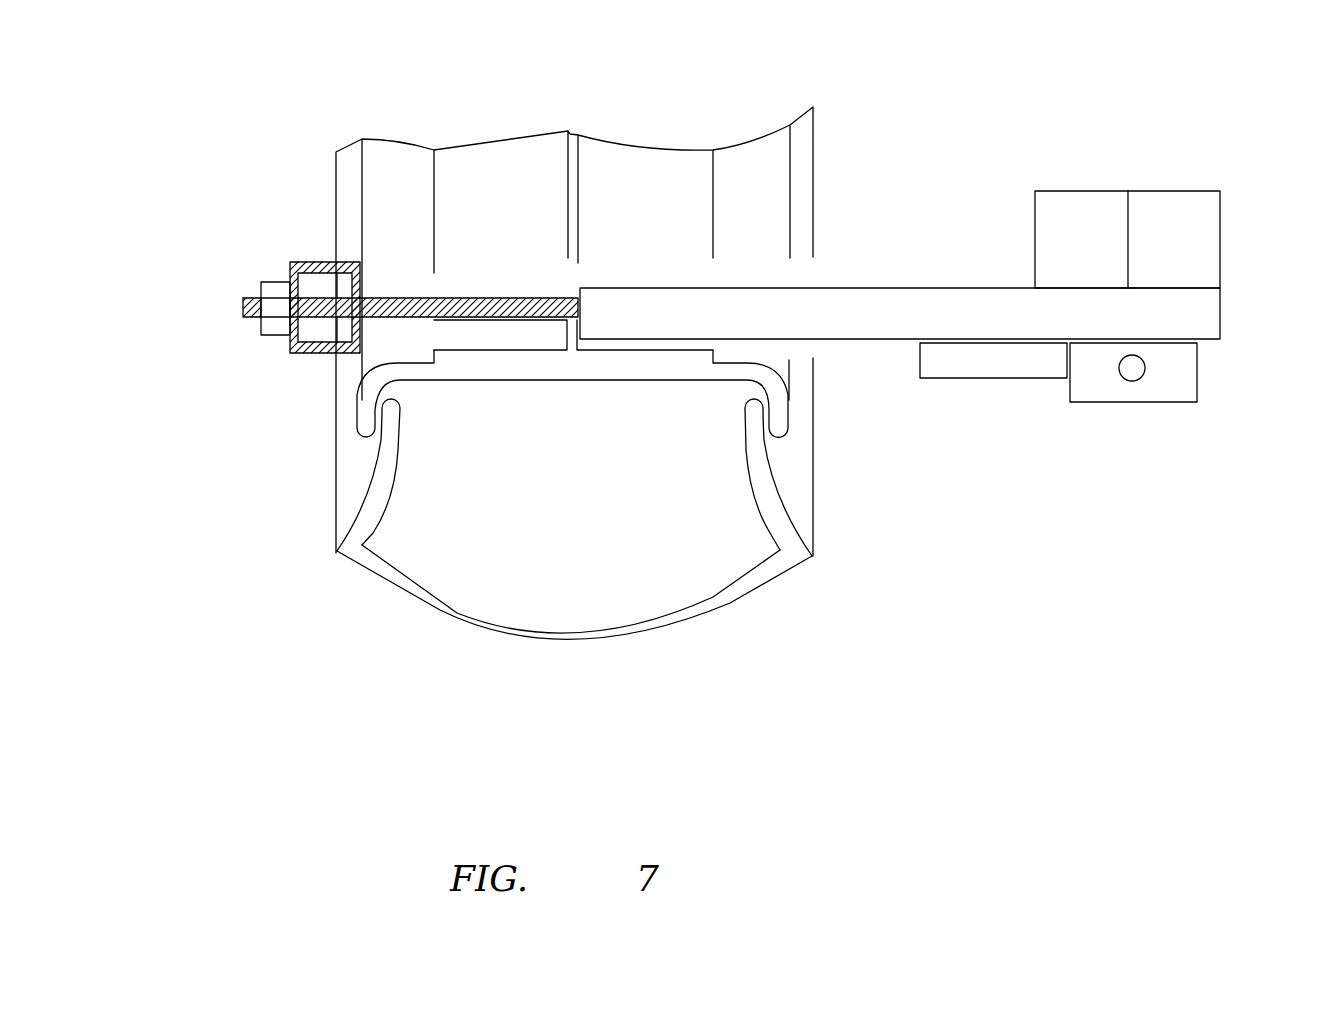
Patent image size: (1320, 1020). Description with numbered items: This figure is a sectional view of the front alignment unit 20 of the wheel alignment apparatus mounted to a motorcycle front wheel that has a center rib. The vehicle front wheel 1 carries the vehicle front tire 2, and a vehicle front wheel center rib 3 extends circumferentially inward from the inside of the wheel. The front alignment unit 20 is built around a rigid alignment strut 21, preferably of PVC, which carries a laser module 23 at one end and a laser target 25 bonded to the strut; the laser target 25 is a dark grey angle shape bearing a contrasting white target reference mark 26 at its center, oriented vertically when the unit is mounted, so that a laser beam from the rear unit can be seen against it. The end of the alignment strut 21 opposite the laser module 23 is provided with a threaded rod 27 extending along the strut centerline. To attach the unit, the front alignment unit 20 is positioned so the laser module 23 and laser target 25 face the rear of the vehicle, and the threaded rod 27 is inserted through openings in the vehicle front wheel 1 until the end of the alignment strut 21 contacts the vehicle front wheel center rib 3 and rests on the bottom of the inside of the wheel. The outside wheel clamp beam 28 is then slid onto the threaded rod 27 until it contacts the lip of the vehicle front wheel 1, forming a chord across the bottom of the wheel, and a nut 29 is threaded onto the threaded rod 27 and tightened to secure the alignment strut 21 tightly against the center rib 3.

The vehicle front wheel 1 is at (665, 147).
The vehicle front tire 2 is at (427, 613).
The vehicle front wheel center rib 3 is at (577, 322).
The front alignment unit 20 is at (1048, 530).
The alignment strut 21 is at (870, 272).
The laser module 23 is at (1137, 380).
The laser target 25 is at (1170, 190).
The target reference mark 26 is at (1128, 191).
The threaded rod 27 is at (537, 298).
The outside wheel clamp beam 28 is at (307, 263).
The nut 29 is at (262, 277).